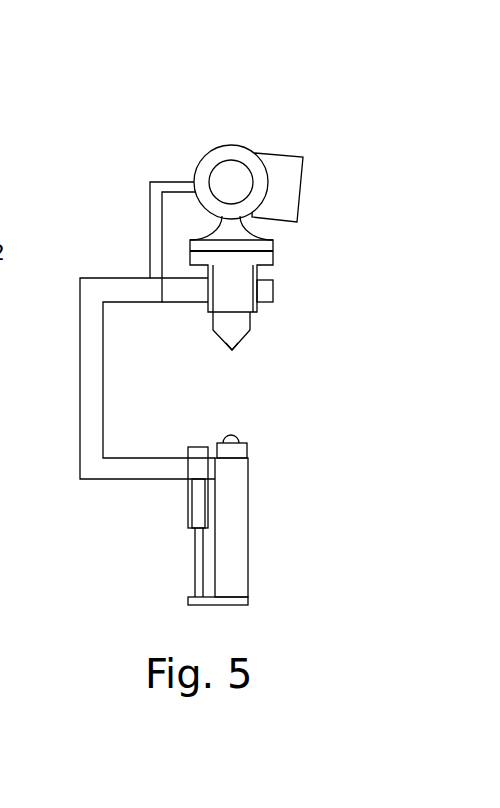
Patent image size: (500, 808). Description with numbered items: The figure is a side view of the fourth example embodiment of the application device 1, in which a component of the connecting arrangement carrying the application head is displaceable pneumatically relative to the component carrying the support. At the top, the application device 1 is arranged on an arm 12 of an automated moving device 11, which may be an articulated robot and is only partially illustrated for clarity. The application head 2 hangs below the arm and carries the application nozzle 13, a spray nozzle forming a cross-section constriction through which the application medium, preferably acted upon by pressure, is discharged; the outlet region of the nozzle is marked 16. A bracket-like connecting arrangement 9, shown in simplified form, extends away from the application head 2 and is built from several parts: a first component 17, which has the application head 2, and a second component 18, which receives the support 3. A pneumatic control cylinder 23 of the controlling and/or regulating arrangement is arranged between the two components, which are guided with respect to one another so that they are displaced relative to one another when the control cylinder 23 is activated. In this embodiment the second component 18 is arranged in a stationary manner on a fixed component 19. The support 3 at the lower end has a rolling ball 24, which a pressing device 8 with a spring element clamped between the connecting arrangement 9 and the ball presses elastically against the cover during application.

The application device 1 is at (136, 171).
The application head 2 is at (245, 260).
The support 3 is at (246, 436).
The pressing device 8 is at (252, 455).
The connecting arrangement 9 is at (76, 362).
The automated moving device 11 is at (248, 147).
The arm 12 is at (287, 167).
The application nozzle 13 is at (230, 337).
The outlet opening 16 is at (242, 337).
The first component 17 is at (95, 348).
The second component 18 is at (233, 503).
The fixed component 19 is at (193, 599).
The control cylinder 23 is at (185, 506).
The rolling ball 24 is at (229, 436).